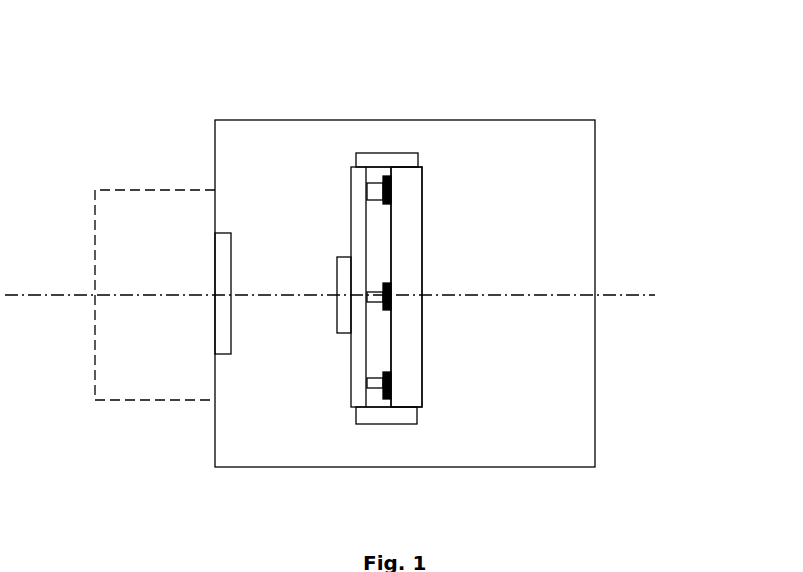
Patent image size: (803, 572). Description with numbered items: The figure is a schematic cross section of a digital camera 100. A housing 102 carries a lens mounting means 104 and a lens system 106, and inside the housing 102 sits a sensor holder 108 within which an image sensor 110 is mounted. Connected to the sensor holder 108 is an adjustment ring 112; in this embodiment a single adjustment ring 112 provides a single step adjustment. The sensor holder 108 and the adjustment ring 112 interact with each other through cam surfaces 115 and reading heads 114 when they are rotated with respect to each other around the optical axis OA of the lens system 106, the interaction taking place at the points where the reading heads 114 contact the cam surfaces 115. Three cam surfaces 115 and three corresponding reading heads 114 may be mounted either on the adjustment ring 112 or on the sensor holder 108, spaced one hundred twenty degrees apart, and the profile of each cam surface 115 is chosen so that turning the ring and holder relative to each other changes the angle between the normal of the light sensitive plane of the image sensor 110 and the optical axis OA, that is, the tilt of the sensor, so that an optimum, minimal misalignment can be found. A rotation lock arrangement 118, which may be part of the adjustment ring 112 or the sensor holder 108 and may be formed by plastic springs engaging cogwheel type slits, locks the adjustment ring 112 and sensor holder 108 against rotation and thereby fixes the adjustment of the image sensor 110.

The digital camera 100 is at (641, 103).
The housing 102 is at (238, 120).
The lens mounting means 104 is at (232, 241).
The lens system 106 is at (157, 400).
The sensor holder 108 is at (349, 391).
The image sensor 110 is at (337, 318).
The adjustment ring 112 is at (425, 200).
The reading heads 114 is at (374, 182).
The cam surfaces 115 is at (388, 178).
The rotation lock arrangement 118 is at (395, 423).
The optical axis OA is at (655, 296).